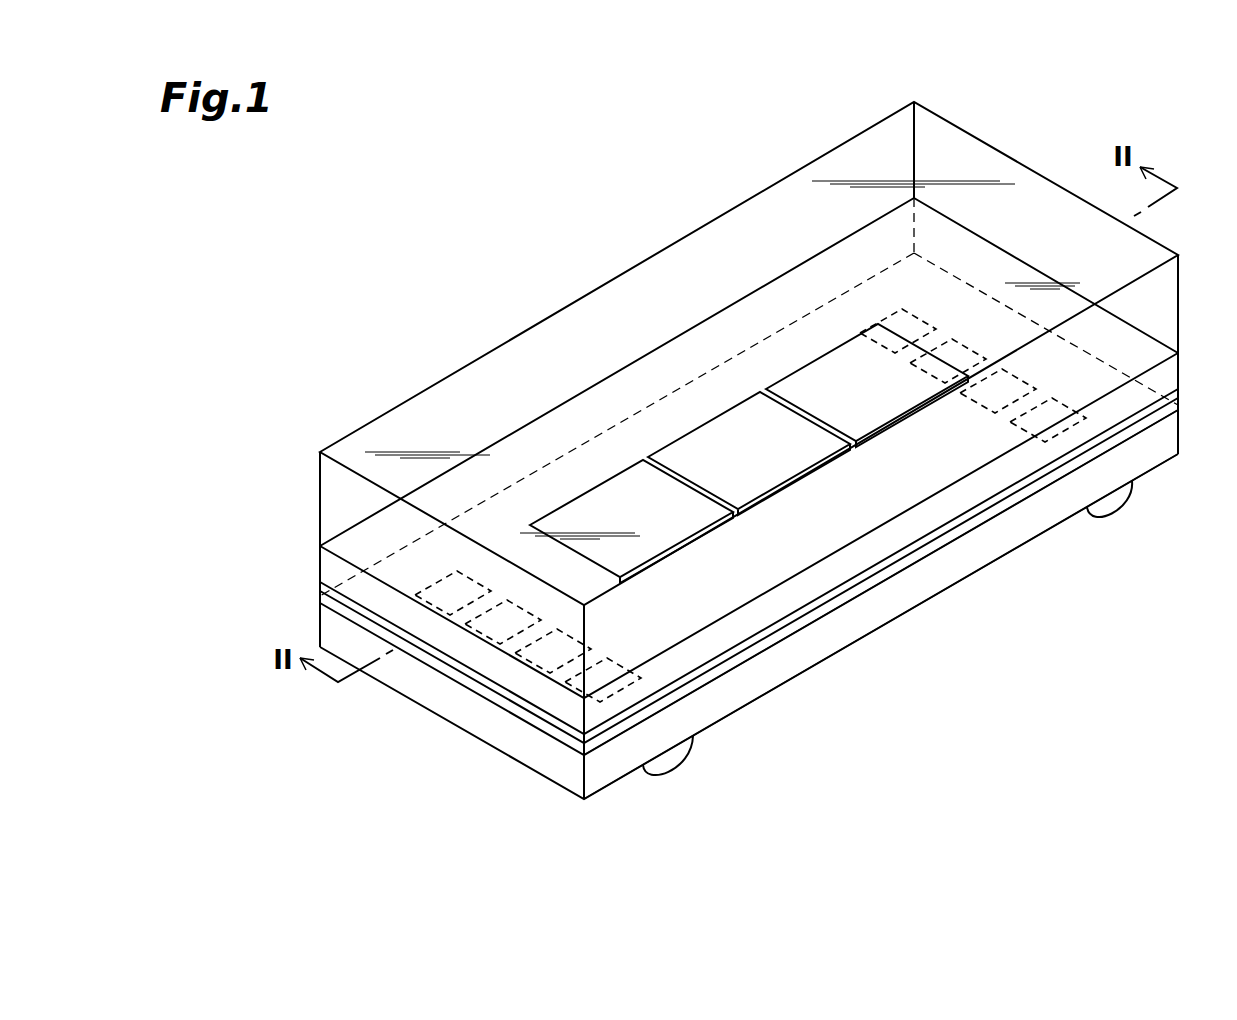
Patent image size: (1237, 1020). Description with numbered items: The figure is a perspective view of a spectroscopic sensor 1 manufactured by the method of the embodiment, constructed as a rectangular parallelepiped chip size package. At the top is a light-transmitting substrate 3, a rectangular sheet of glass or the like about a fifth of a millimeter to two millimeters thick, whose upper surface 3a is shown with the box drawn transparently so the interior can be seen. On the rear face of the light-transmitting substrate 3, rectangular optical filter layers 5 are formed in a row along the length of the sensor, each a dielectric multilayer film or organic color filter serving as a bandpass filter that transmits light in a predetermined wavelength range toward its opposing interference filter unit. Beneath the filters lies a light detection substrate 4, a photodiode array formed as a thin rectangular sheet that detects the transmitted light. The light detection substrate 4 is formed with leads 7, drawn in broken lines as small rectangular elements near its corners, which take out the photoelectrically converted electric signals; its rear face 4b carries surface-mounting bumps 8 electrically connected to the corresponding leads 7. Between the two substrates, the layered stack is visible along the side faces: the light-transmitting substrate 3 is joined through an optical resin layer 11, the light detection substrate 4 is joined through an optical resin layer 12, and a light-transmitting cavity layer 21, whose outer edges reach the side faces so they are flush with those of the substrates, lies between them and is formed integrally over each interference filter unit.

The spectroscopic sensor 1 is at (486, 193).
The light-transmitting substrate 3 is at (1180, 304).
The top surface of lid 3a is at (958, 148).
The light detection substrate 4 is at (775, 576).
The rear face of the light detection substrate 4b is at (949, 597).
The optical filter layer 5 is at (603, 503).
The leads 7 is at (530, 613).
The surface-mounting bumps 8 is at (1110, 507).
The optical resin layer 11 is at (455, 652).
The optical resin layer 12 is at (527, 715).
The cavity layer 21 is at (830, 592).